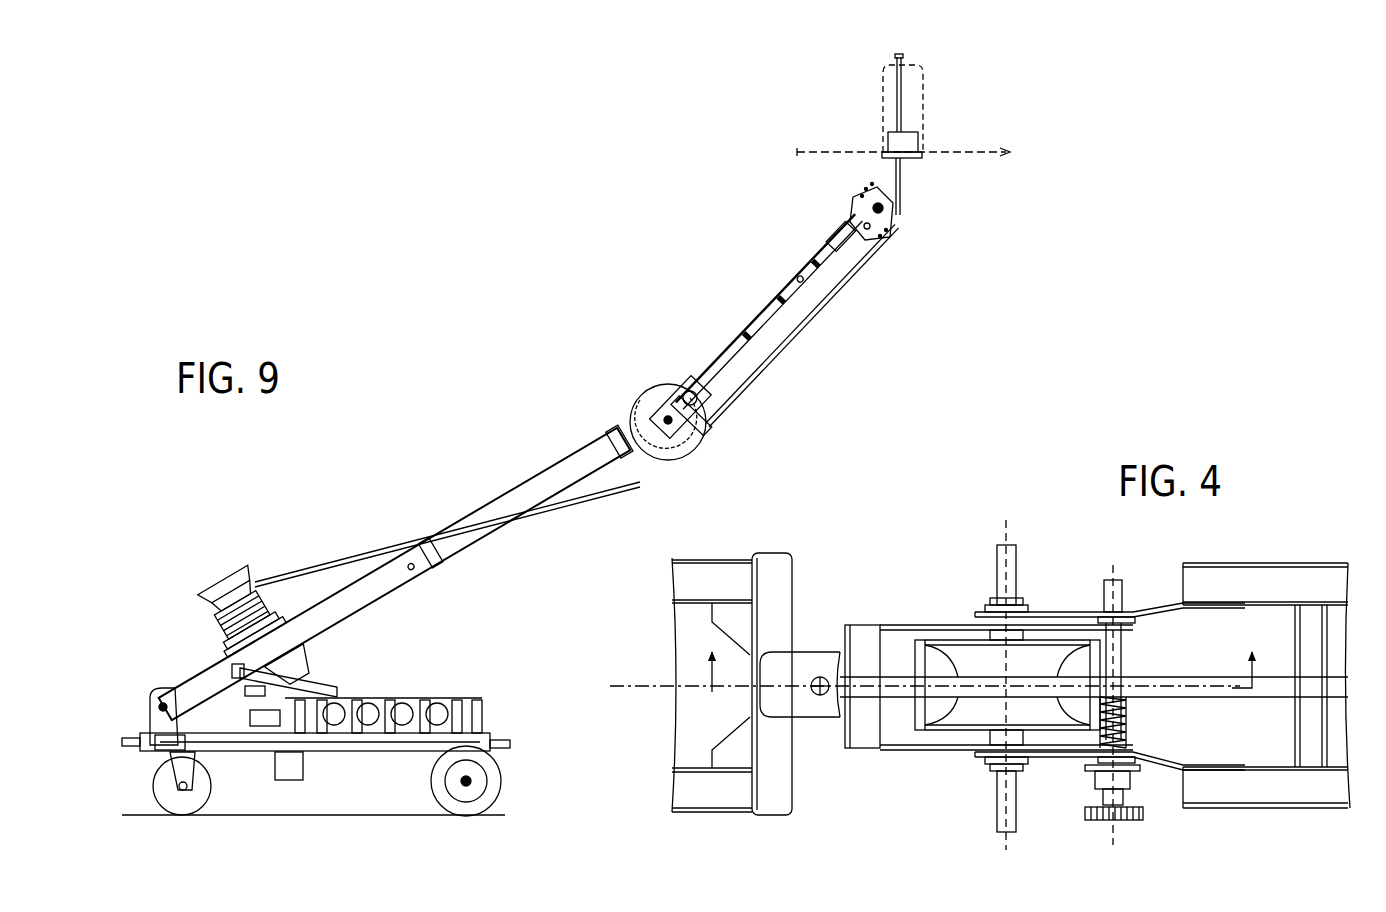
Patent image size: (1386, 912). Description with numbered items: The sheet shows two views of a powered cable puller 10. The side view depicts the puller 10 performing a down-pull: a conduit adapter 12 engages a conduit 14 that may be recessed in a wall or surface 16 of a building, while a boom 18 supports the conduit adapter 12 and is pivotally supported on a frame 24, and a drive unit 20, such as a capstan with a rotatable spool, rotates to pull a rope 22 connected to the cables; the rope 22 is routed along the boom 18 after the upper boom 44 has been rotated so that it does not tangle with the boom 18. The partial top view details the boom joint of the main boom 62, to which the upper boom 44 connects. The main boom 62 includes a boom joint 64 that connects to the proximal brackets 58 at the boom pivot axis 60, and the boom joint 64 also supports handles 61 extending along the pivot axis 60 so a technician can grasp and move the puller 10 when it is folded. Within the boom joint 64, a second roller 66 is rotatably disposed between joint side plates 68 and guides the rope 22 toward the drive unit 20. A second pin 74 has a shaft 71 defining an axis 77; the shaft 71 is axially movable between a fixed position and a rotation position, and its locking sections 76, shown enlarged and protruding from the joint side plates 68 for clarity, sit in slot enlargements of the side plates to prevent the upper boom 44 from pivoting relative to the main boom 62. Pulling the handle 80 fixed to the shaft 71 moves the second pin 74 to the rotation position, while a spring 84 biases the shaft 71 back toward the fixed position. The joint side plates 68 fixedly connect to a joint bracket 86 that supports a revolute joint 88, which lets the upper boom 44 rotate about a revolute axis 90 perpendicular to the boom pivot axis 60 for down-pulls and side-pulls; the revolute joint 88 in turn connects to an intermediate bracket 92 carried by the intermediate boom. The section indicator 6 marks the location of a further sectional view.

In FIG. 9, the powered cable puller 10 is at (432, 411).
In FIG. 9, the conduit adapter 12 is at (907, 160).
In FIG. 9, the conduit 14 is at (885, 105).
In FIG. 9, the wall or surface 16 is at (833, 155).
In FIG. 9, the boom 18 is at (513, 497).
In FIG. 9, the drive unit 20 is at (250, 583).
In FIG. 9, the rope 22 is at (401, 546).
In FIG. 4, the rope 22 is at (863, 672).
In FIG. 9, the frame 24 is at (488, 734).
In FIG. 4, the upper boom 44 is at (1228, 592).
In FIG. 4, the proximal brackets 58 is at (1075, 612).
In FIG. 4, the boom pivot axis 60 is at (1012, 530).
In FIG. 4, the handles 61 is at (1000, 575).
In FIG. 4, the main boom 62 is at (722, 590).
In FIG. 4, the boom joint 64 is at (933, 622).
In FIG. 4, the second roller 66 is at (960, 718).
In FIG. 4, the joint side plates 68 is at (1038, 625).
In FIG. 4, the shaft 71 is at (1122, 668).
In FIG. 4, the second pin 74 is at (1125, 648).
In FIG. 4, the locking sections 76 is at (1122, 618).
In FIG. 4, the axis 77 is at (1115, 578).
In FIG. 4, the handle 80 is at (1140, 815).
In FIG. 4, the spring 84 is at (1127, 716).
In FIG. 4, the joint bracket 86 is at (862, 733).
In FIG. 4, the revolute joint 88 is at (826, 712).
In FIG. 4, the revolute axis 90 is at (672, 686).
In FIG. 4, the intermediate bracket 92 is at (780, 808).
In FIG. 4, the section line 6- 6 is at (981, 685).